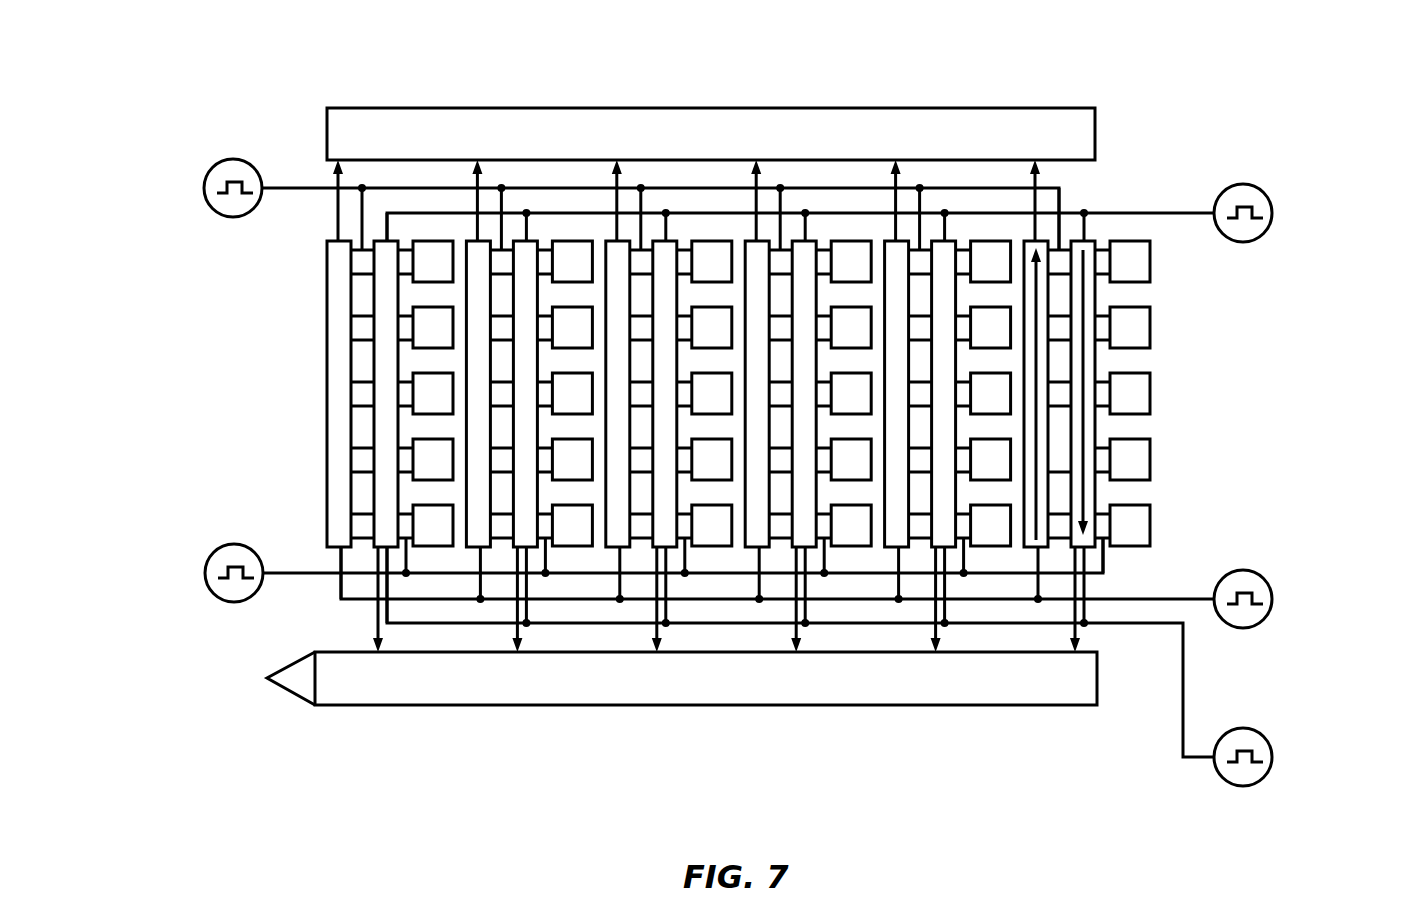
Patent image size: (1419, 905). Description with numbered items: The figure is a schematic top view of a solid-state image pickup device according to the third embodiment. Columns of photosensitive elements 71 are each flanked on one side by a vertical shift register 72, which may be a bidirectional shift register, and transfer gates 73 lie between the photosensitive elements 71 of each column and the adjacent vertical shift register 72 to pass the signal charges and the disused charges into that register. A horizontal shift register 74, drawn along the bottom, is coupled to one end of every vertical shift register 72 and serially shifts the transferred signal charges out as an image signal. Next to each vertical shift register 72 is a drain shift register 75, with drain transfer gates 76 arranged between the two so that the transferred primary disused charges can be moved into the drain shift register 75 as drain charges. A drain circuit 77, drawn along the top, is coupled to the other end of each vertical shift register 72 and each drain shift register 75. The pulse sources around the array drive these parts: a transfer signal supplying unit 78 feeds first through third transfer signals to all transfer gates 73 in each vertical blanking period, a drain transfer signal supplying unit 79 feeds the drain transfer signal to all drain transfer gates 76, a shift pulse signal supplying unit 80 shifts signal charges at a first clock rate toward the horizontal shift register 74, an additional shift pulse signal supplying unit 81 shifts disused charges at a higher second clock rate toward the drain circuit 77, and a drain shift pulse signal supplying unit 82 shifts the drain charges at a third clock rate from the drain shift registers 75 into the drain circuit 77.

The photosensitive element 71 is at (1150, 262).
The vertical shift register 72 is at (1097, 358).
The transfer gate 73 is at (1100, 448).
The horizontal shift register 74 is at (838, 705).
The drain shift register 75 is at (1033, 242).
The drain transfer gate 76 is at (1050, 472).
The drain circuit 77 is at (684, 108).
The transfer signal supplying unit 78 is at (205, 573).
The drain transfer signal supplying unit 79 is at (204, 189).
The shift pulse signal supplying unit 80 is at (1272, 211).
The additional shift pulse signal supplying unit 81 is at (1272, 750).
The drain shift pulse signal supplying unit 82 is at (1272, 595).